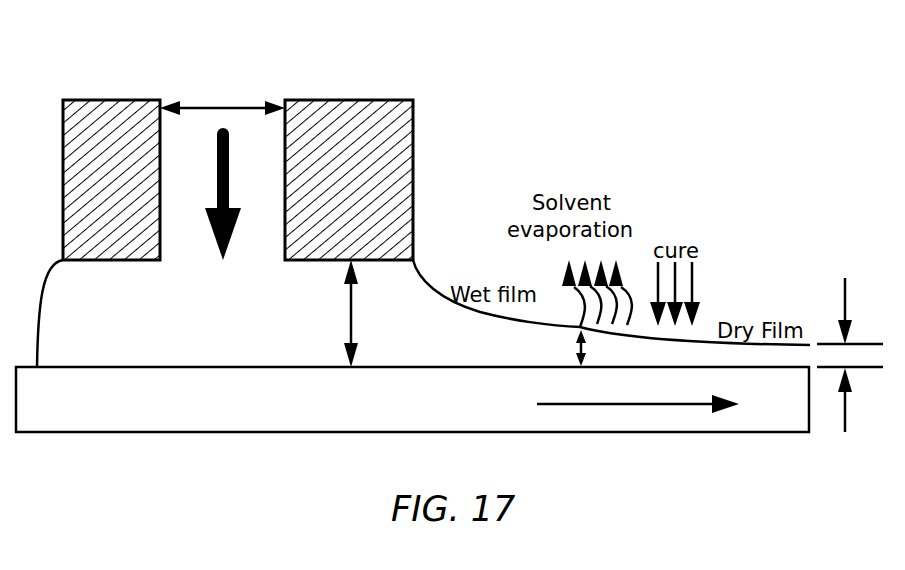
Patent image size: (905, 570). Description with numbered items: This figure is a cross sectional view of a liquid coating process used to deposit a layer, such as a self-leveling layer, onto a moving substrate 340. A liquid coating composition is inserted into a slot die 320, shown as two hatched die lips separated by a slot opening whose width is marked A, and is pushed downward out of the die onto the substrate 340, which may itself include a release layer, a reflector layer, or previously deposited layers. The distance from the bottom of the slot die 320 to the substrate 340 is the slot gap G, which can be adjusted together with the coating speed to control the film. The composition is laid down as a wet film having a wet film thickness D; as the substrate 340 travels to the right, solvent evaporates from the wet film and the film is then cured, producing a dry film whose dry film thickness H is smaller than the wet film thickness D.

The slot die 320 is at (348, 100).
The substrate 340 is at (63, 433).
The slot gap width A is at (222, 99).
The slot gap G is at (358, 313).
The wet film thickness D is at (572, 348).
The dry film thickness H is at (850, 355).